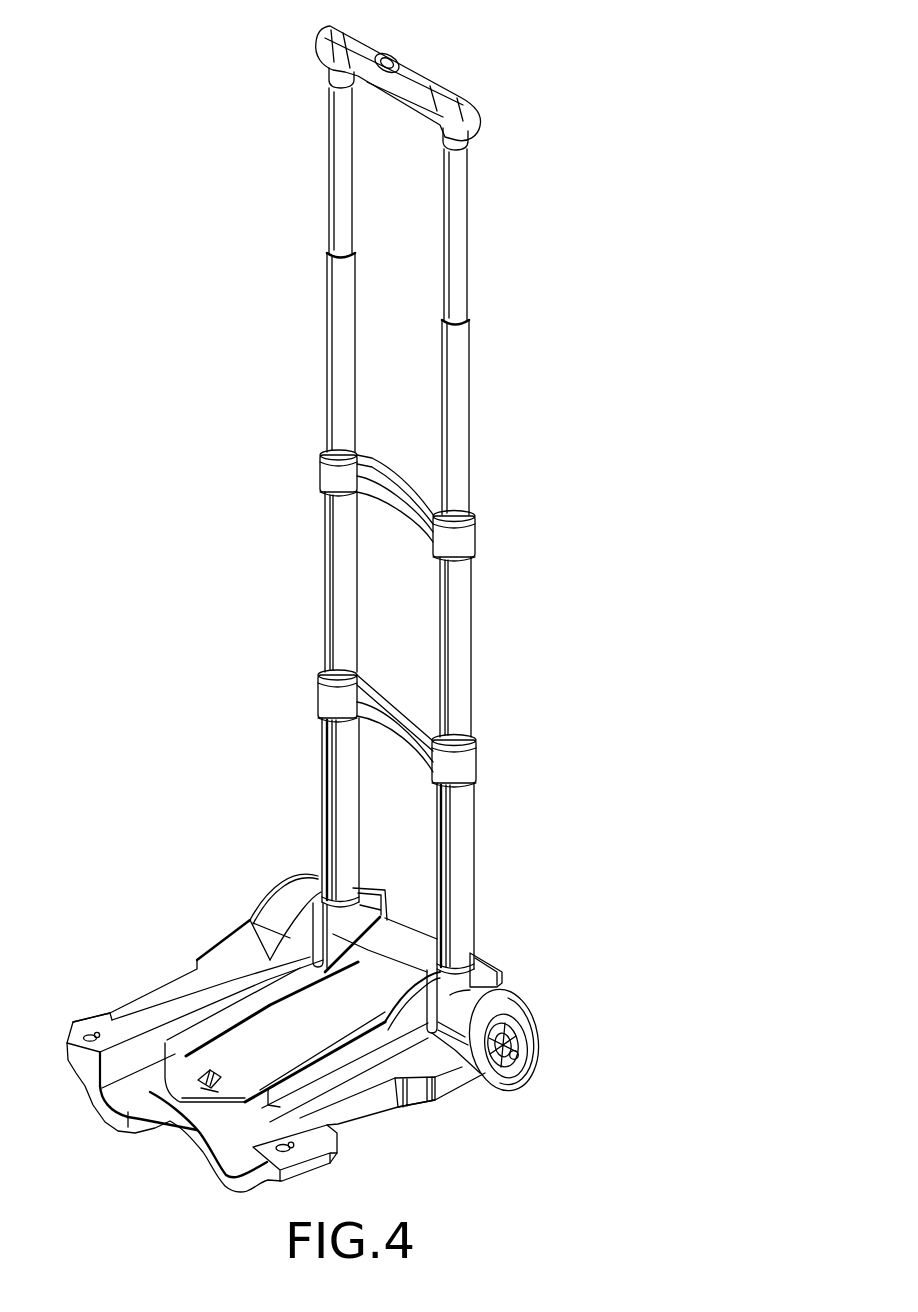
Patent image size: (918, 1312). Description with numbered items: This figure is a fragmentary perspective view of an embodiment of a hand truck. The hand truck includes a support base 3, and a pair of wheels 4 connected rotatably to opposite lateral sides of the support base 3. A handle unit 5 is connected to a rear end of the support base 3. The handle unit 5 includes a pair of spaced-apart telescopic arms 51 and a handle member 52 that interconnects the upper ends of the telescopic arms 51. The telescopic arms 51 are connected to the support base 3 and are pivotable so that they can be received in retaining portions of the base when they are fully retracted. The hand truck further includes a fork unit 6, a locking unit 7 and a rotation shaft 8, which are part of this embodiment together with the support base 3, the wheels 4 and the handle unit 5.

The support base 3 is at (328, 1012).
The wheels 4 is at (532, 1038).
The handle unit 5 is at (436, 500).
The fork unit 6 is at (230, 1085).
The locking unit 7 is at (197, 1082).
The rotation shaft 8 is at (517, 1057).
The telescopic arms 51 is at (328, 808).
The handle member 52 is at (423, 84).